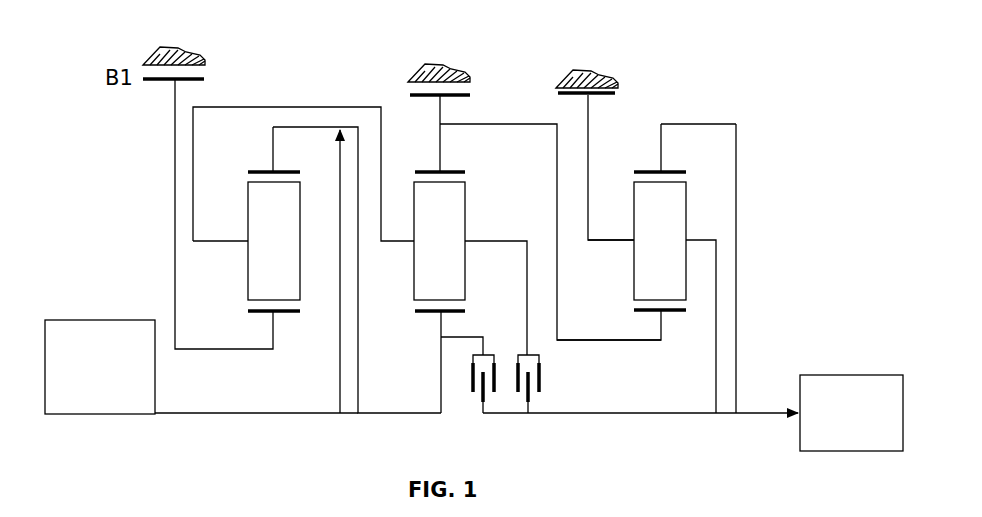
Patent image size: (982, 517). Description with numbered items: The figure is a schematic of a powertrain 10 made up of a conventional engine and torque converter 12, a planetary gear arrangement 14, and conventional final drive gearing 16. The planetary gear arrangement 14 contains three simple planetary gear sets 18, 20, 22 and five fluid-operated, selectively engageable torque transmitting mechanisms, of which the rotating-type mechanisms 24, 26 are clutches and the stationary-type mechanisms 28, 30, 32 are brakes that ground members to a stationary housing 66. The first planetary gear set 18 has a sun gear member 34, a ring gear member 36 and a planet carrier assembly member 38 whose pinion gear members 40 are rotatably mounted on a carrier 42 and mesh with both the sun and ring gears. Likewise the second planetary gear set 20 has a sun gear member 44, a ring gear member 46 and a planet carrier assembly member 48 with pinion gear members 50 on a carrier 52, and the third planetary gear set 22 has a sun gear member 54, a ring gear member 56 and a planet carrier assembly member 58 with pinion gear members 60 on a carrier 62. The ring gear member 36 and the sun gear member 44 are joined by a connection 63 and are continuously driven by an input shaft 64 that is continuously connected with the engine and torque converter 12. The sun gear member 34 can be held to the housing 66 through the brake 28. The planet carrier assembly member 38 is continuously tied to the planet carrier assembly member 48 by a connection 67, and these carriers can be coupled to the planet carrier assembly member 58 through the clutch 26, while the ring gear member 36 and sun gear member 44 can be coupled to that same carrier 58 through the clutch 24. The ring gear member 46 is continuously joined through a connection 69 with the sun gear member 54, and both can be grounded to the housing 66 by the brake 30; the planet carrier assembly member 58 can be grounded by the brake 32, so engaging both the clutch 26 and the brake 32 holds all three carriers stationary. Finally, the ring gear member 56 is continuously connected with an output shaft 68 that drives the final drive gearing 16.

The powertrain 10 is at (128, 234).
The engine and torque converter 12 is at (105, 317).
The planetary gear arrangement 14 is at (364, 87).
The final drive gearing 16 is at (850, 456).
The first planetary gear set 18 is at (309, 320).
The second planetary gear set 20 is at (399, 299).
The third planetary gear set 22 is at (698, 310).
The torque transmitting mechanism 24 is at (467, 391).
The torque transmitting mechanism 26 is at (547, 392).
The torque transmitting mechanism 28 is at (207, 73).
The torque transmitting mechanism 30 is at (470, 88).
The torque transmitting mechanism 32 is at (619, 88).
The sun gear member 34 is at (273, 330).
The ring gear member 36 is at (262, 172).
The planet carrier assembly member 38 is at (312, 248).
The pinion gear members 40 is at (295, 232).
The carrier 42 is at (218, 243).
The sun gear member 44 is at (427, 315).
The ring gear member 46 is at (428, 172).
The planet carrier assembly member 48 is at (489, 202).
The pinion gear members 50 is at (458, 226).
The carrier 52 is at (410, 243).
The sun gear member 54 is at (643, 311).
The ring gear member 56 is at (648, 172).
The planet carrier assembly member 58 is at (694, 223).
The pinion gear members 60 is at (643, 270).
The carrier 62 is at (610, 240).
The connection 63 is at (315, 127).
The input shaft 64 is at (190, 418).
The stationary housing 66 is at (146, 58).
The connection 67 is at (258, 107).
The output shaft 68 is at (768, 418).
The connection 69 is at (595, 347).